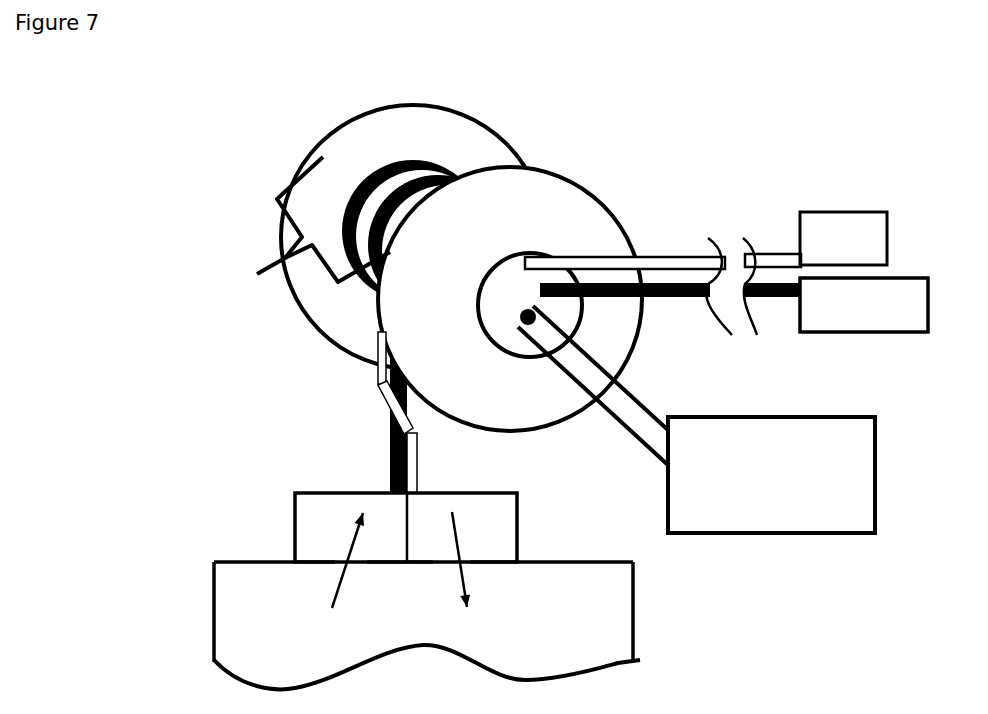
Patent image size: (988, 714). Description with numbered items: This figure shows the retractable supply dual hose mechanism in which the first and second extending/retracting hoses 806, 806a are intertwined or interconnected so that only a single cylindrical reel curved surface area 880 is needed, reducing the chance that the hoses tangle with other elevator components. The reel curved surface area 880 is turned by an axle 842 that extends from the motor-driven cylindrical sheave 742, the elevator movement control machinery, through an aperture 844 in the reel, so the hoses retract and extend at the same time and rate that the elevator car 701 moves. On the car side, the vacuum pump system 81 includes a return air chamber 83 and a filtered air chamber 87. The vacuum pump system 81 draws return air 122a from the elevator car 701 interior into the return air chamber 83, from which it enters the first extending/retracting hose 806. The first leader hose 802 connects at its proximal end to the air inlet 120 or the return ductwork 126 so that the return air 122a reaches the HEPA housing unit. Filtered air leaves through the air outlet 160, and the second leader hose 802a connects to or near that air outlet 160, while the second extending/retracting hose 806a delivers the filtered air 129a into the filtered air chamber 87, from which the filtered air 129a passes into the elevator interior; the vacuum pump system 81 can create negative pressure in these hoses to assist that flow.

The cylindrical reel curved surface area 880 is at (257, 274).
The aperture 844 is at (522, 316).
The axle 842 is at (500, 349).
The second extending/retracting hose 806a is at (379, 382).
The first extending/retracting hose 806 is at (390, 446).
The vacuum pump system 81 is at (294, 529).
The return air 122a is at (336, 578).
The elevator car 701 is at (212, 608).
The outlet passage 129a is at (468, 617).
The return air chamber 83 is at (337, 557).
The filtered air chamber 87 is at (446, 557).
The motor-driven cylindrical sheave 742 is at (696, 419).
The first leader hose 802 is at (781, 298).
The second leader hose 802a is at (772, 251).
The air outlet 160 is at (843, 238).
The air inlet 120 is at (864, 305).
The return ductwork 126 is at (864, 305).